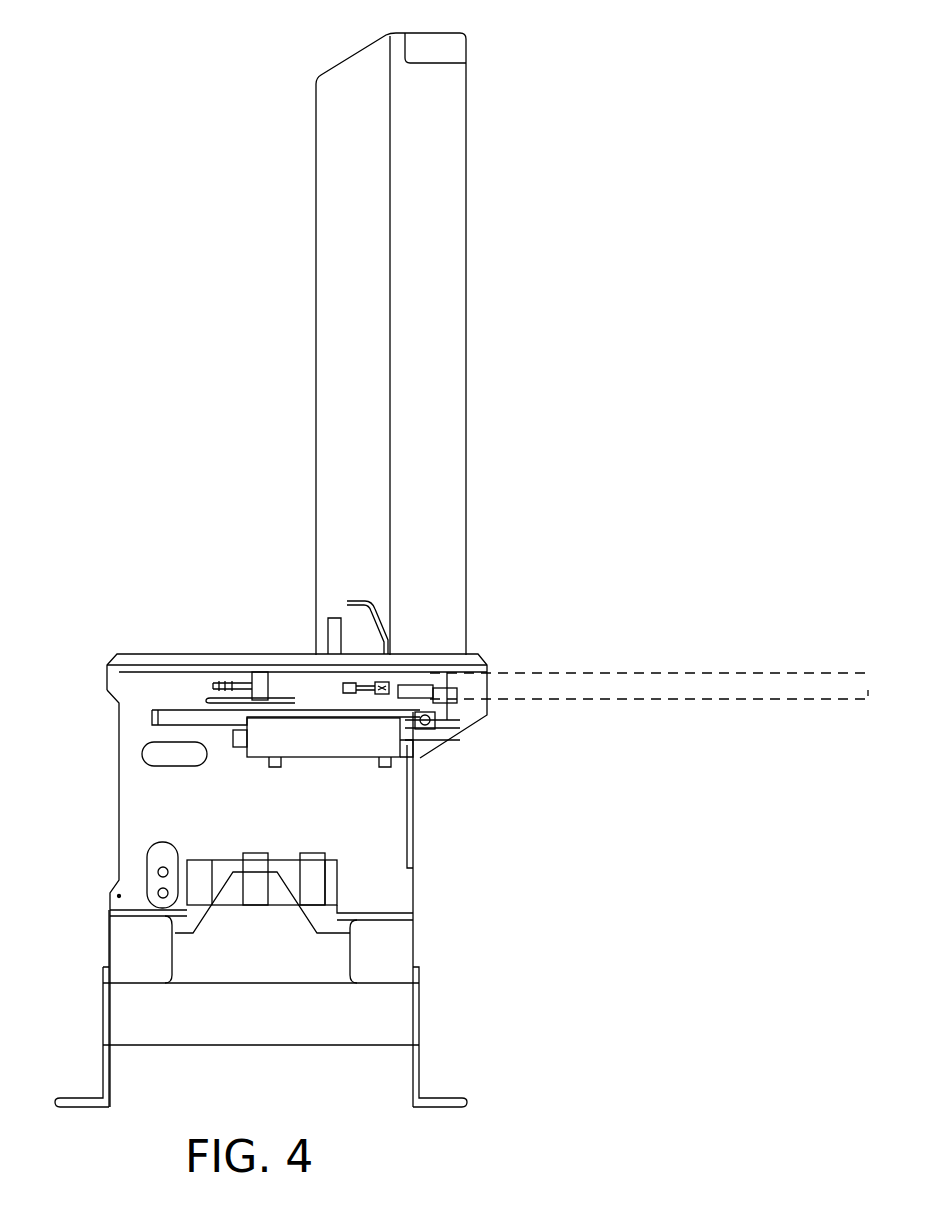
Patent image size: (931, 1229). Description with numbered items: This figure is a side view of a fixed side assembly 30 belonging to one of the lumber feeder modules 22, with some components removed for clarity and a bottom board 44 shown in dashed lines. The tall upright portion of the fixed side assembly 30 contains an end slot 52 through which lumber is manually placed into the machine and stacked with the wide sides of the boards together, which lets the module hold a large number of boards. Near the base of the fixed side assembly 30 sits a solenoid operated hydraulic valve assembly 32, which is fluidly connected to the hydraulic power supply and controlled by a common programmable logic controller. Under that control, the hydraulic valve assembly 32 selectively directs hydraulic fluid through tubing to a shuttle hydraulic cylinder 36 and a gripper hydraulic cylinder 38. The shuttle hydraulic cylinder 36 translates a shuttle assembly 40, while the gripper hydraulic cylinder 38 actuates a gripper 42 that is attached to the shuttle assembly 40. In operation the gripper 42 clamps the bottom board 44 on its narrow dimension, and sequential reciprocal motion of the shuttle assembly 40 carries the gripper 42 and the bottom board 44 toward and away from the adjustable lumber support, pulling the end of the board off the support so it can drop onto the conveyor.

The fixed side assembly 30 is at (143, 306).
The end slot 52 is at (480, 330).
The module 22 is at (470, 538).
The gripper hydraulic cylinder 38 is at (258, 670).
The gripper 42 is at (385, 684).
The bottom board 44 is at (748, 690).
The shuttle assembly 40 is at (430, 735).
The shuttle hydraulic cylinder 36 is at (398, 752).
The hydraulic valve assembly 32 is at (353, 890).